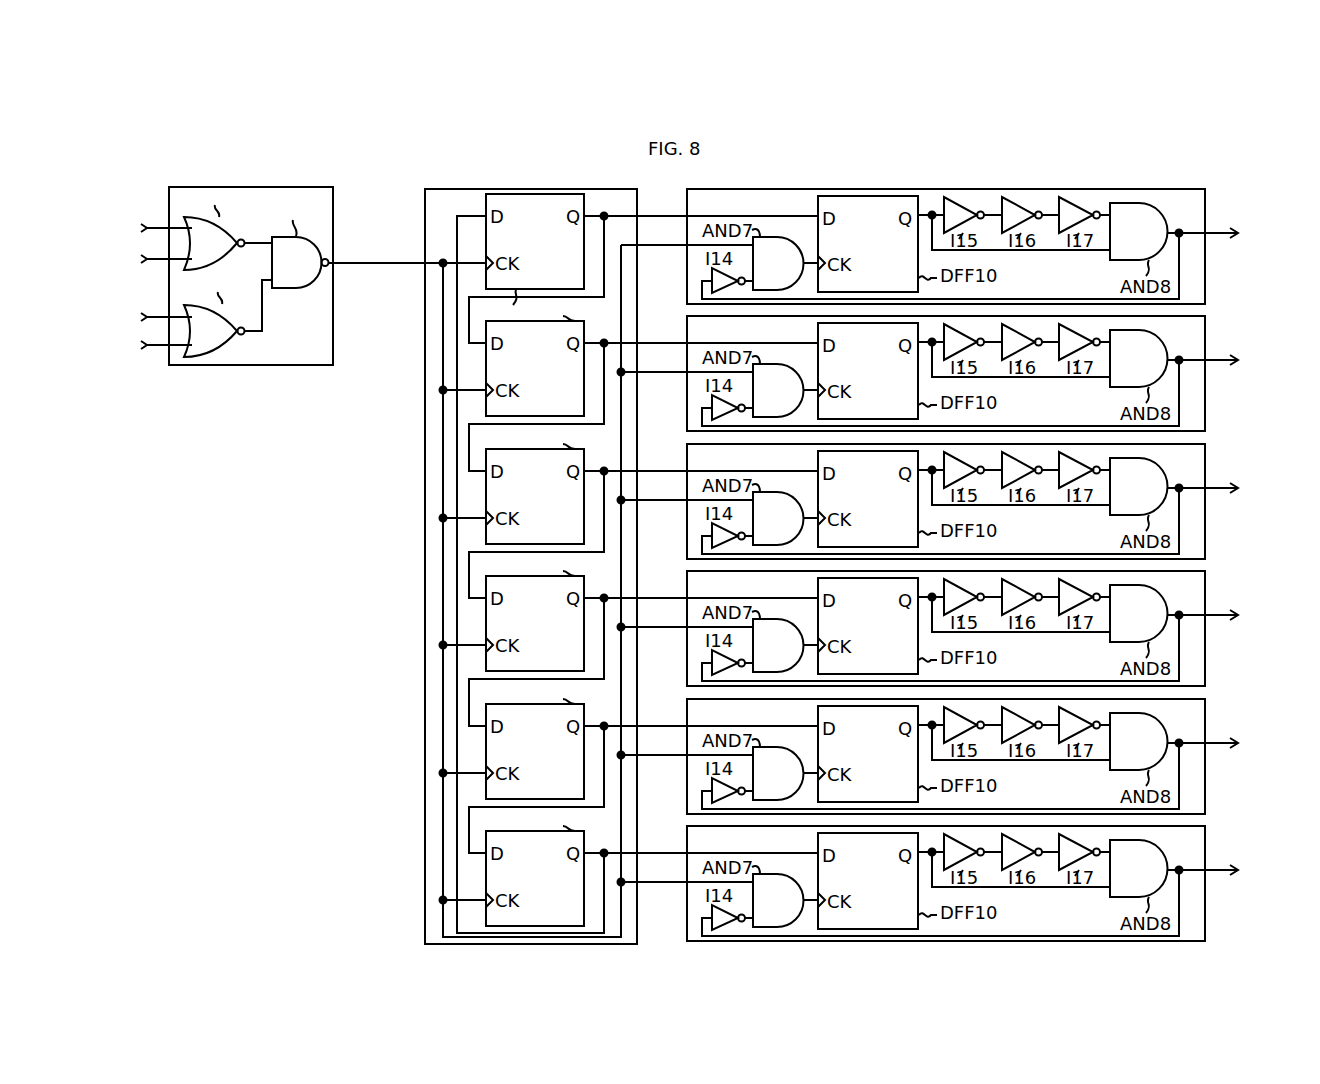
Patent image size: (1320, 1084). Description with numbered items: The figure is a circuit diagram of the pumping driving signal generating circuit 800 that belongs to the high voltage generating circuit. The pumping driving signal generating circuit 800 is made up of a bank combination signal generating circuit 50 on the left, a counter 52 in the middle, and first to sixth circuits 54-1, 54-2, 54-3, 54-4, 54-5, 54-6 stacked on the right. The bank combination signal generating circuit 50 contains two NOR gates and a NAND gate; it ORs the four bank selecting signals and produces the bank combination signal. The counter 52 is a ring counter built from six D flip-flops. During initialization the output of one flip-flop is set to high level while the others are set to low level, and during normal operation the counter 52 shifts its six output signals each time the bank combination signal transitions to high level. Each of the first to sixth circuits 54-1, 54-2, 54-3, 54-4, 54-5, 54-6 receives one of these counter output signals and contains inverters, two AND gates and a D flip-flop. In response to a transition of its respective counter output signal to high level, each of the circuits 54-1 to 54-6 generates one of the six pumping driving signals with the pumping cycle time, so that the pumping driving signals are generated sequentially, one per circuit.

The pumping driving signal generating circuit 800 is at (984, 172).
The bank combination signal generating circuit 50 is at (271, 365).
The counter 52 is at (425, 464).
The first circuit 54-1 is at (1205, 192).
The second circuit 54-2 is at (961, 368).
The third circuit 54-3 is at (961, 496).
The fourth circuit 54-4 is at (961, 623).
The fifth circuit 54-5 is at (961, 751).
The sixth circuit 54-6 is at (961, 878).